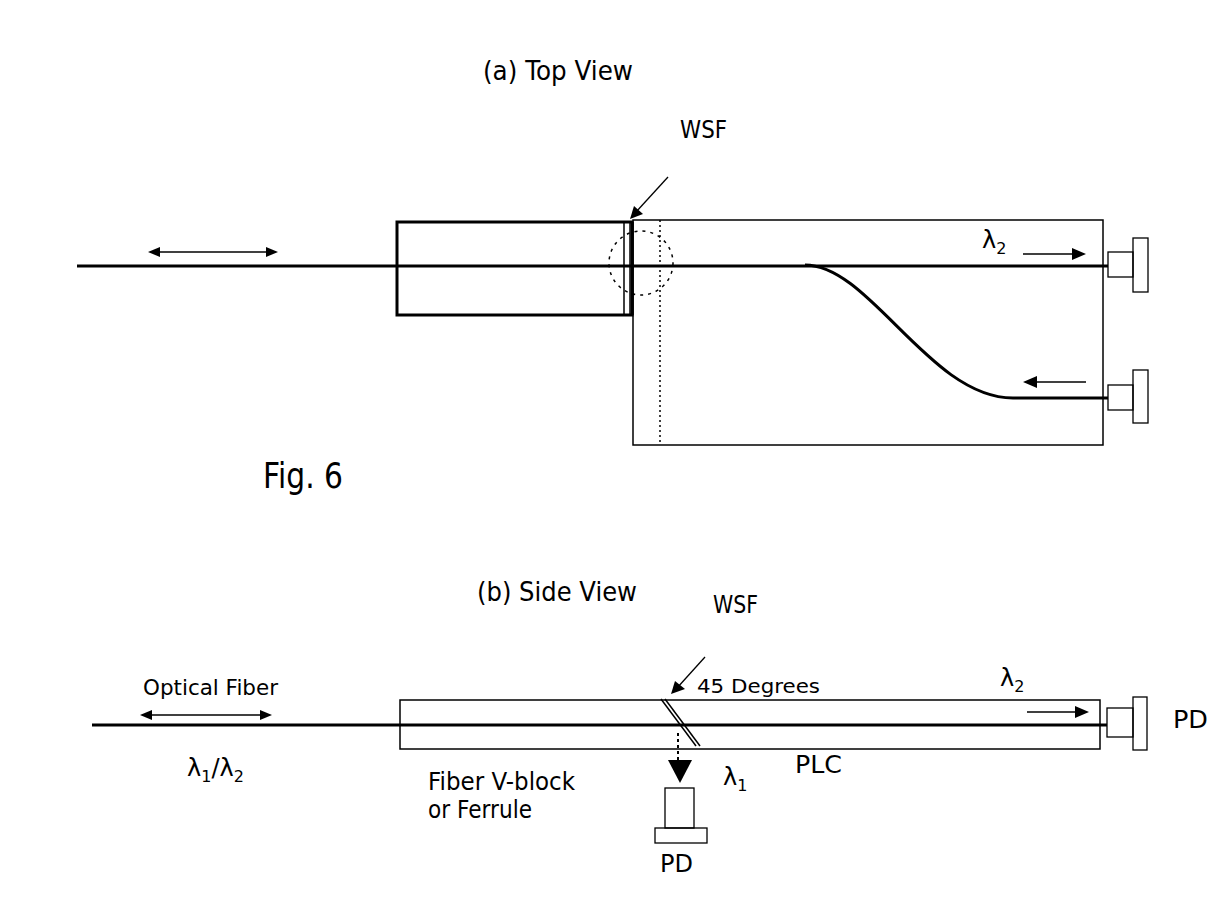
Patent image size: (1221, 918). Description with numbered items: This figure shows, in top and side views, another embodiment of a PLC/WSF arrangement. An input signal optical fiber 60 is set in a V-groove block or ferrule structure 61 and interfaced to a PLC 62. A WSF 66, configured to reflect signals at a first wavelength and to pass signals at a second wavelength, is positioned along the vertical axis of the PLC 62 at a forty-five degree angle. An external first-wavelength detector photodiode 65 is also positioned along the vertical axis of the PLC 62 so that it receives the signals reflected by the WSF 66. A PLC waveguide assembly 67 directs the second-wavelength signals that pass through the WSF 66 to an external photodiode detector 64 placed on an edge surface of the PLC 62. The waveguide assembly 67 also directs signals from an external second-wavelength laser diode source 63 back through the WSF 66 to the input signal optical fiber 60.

The input signal optical fiber 60 is at (328, 268).
The V-groove block or ferrule structure 61 is at (403, 318).
The PLC 62 is at (763, 418).
The λ2 laser diode source 63 is at (1133, 418).
The photodiode detector 64 is at (1127, 238).
The λ1 detector photodiode 65 is at (670, 253).
The WSF 66 is at (618, 232).
The PLC waveguide assembly 67 is at (900, 265).